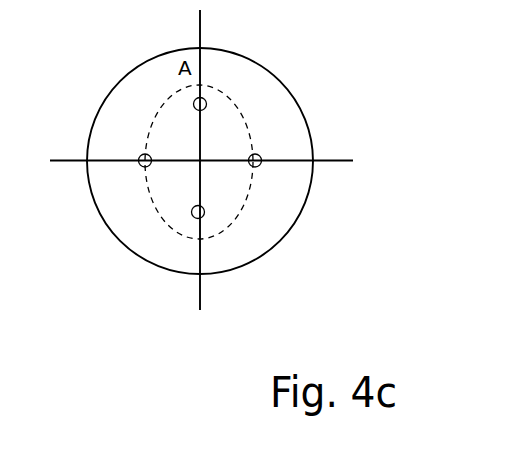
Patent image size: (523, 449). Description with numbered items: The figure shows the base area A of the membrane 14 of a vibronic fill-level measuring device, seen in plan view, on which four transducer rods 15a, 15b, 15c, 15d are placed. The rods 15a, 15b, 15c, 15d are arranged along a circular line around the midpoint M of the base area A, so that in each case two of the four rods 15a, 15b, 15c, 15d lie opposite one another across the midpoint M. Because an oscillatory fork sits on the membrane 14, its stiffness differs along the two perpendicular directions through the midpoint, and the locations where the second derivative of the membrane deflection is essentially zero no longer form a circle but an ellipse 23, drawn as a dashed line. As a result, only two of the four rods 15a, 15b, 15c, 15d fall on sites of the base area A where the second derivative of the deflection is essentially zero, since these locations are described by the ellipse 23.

The membrane 14 is at (58, 88).
The ellipse 23 is at (157, 205).
The rod 15a is at (143, 170).
The rod 15b is at (262, 162).
The rod 15c is at (206, 216).
The rod 15d is at (205, 98).